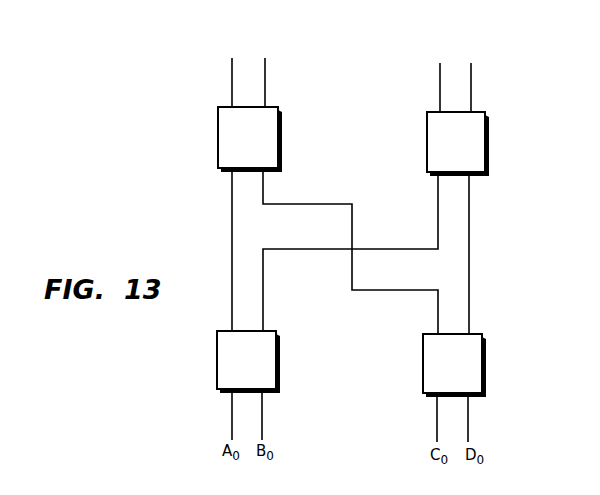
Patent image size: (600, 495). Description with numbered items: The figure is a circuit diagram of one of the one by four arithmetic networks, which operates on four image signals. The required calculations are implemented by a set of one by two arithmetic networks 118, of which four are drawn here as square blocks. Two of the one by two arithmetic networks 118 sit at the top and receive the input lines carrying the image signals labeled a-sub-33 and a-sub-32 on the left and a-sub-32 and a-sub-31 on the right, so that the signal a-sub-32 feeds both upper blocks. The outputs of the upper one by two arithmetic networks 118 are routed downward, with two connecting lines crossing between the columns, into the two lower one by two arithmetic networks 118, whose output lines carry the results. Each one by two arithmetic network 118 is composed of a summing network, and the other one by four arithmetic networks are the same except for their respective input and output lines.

The 1 by 2 arithmetic network 118 is at (282, 119).
The input signal a33 33 is at (227, 70).
The input signal a32 32 is at (353, 72).
The input signal a31 31 is at (481, 74).